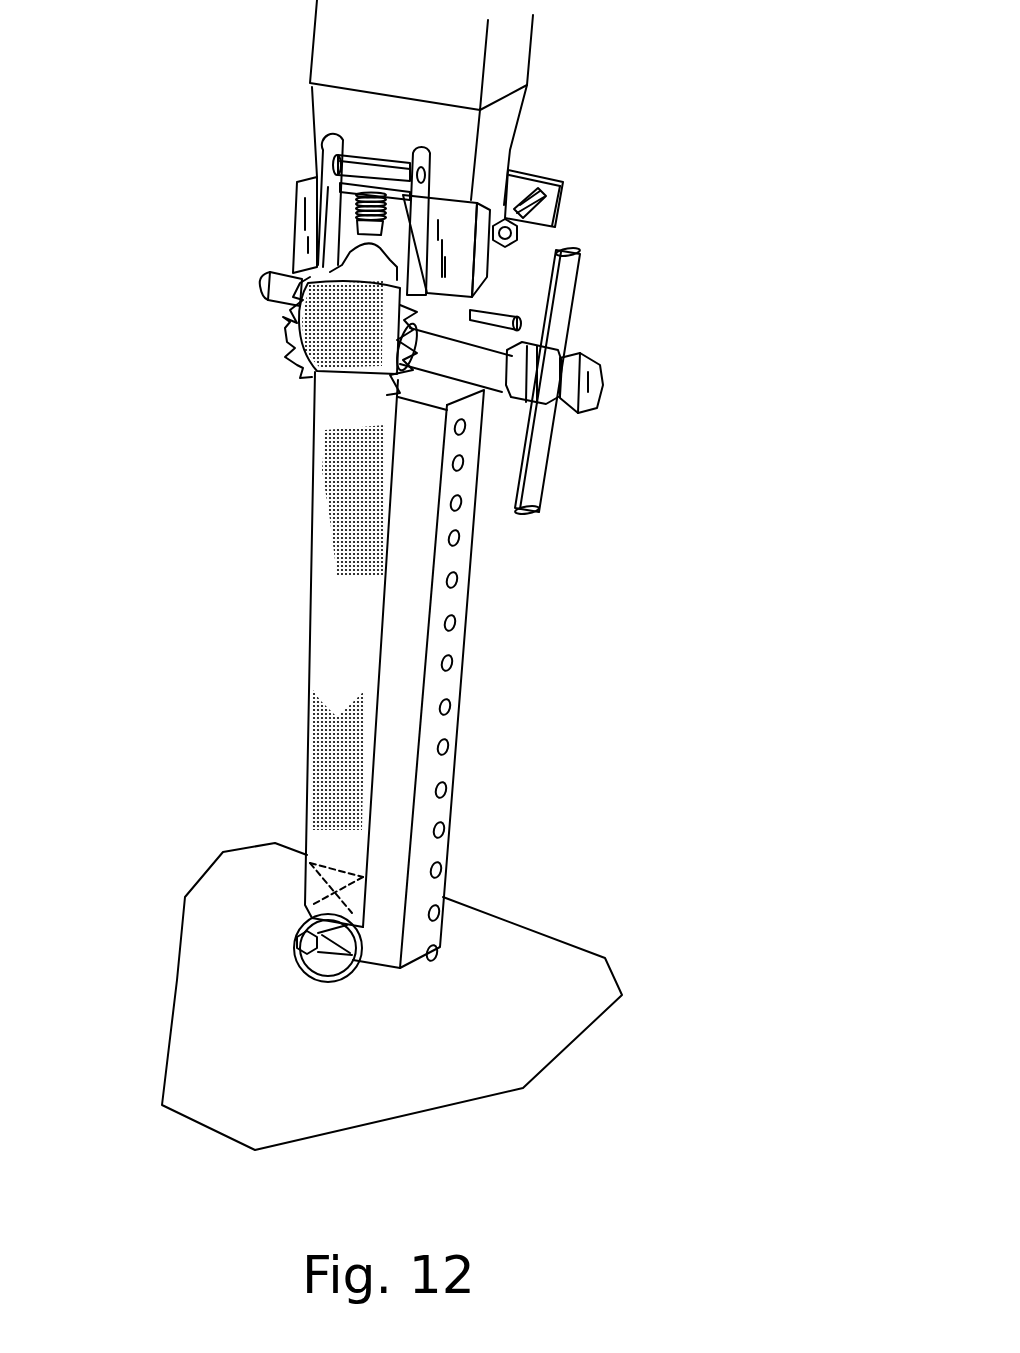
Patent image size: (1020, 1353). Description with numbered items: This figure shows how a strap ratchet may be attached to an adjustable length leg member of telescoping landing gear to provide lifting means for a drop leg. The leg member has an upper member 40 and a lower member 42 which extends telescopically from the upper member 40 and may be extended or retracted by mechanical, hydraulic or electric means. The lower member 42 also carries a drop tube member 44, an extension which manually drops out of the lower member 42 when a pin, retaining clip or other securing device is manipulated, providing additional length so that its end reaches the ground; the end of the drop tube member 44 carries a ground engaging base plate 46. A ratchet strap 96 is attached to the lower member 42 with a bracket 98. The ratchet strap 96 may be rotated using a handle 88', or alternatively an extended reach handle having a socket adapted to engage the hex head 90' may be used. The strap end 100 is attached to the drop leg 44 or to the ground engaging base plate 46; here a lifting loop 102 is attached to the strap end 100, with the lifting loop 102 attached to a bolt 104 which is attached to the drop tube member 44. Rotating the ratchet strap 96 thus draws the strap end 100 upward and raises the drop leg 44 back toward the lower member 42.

The upper member 40 is at (527, 50).
The lower member 42 is at (507, 135).
The bracket 98 is at (552, 208).
The handle 88' is at (636, 381).
The hex head 90' is at (649, 411).
The ratchet strap 96 is at (283, 343).
The drop tube member 44 is at (453, 715).
The strap end 100 is at (307, 895).
The ground engaging base plate 46 is at (520, 1018).
The bolt 104 is at (302, 975).
The lifting loop 102 is at (338, 981).